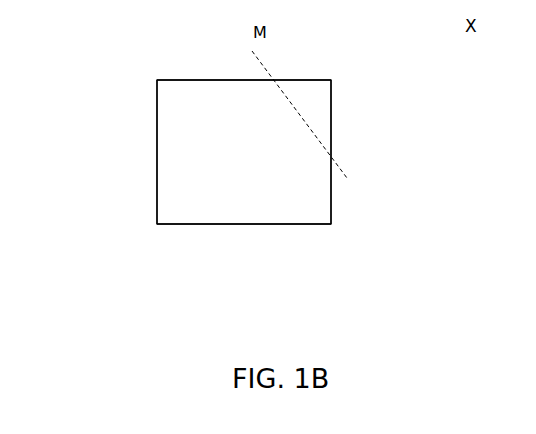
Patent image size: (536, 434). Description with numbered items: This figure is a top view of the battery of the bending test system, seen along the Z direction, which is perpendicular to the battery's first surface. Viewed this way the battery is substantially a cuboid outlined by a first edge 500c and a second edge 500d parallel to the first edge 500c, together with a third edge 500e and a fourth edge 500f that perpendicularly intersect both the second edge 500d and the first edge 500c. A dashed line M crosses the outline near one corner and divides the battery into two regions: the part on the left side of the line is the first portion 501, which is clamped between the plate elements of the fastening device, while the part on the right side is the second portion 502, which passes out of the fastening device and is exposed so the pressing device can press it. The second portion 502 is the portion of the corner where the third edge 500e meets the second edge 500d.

The first portion 501 is at (194, 189).
The second portion 502 is at (295, 108).
The first edge 500c is at (251, 224).
The second edge 500d is at (199, 80).
The third edge 500e is at (333, 188).
The fourth edge 500f is at (157, 148).